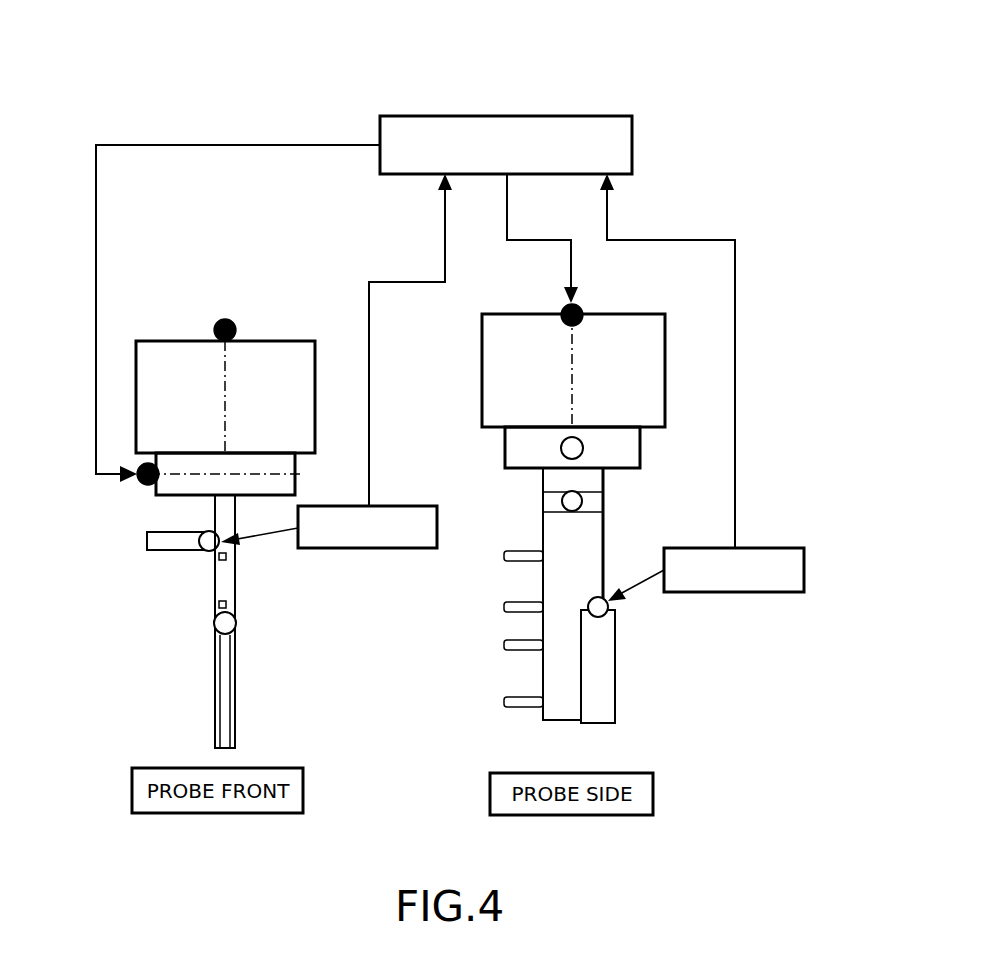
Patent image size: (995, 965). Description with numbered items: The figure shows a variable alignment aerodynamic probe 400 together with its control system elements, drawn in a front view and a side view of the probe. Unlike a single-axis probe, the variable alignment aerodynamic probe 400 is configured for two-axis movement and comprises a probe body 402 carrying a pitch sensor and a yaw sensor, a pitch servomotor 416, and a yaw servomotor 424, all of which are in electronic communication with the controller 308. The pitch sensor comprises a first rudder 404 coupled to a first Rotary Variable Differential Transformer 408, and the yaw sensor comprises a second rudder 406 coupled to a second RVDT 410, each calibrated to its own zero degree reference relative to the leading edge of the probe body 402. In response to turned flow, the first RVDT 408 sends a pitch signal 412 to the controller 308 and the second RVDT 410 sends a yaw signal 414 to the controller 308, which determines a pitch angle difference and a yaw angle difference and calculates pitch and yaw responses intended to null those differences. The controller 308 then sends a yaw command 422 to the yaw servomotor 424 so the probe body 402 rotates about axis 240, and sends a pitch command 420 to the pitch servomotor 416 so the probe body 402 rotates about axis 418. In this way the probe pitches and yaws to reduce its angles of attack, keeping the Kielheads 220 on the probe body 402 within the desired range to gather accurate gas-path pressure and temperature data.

The variable alignment aerodynamic probe 400 is at (745, 70).
The controller 308 is at (620, 126).
The pitch command 420 is at (237, 146).
The yaw command 422 is at (522, 242).
The yaw servomotor 424 is at (237, 326).
The axis 240 is at (228, 403).
The axis 418 is at (206, 472).
The pitch servomotor 416 is at (140, 486).
The pitch signal 412 is at (369, 410).
The yaw signal 414 is at (735, 440).
The first rudder 404 is at (163, 552).
The first Rotary Variable Differential Transformer 408 is at (318, 549).
The second rudder 406 is at (606, 500).
The probe body 402 is at (408, 608).
The Kielheads 220 is at (516, 605).
The second Rotary Variable Differential Transformer 410 is at (790, 592).